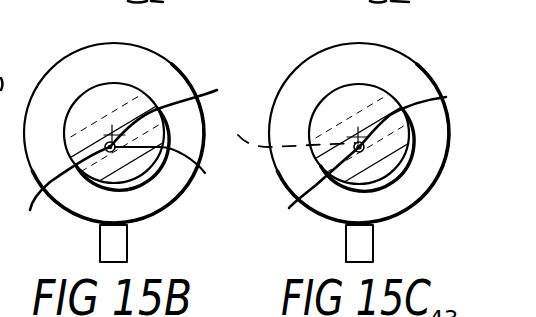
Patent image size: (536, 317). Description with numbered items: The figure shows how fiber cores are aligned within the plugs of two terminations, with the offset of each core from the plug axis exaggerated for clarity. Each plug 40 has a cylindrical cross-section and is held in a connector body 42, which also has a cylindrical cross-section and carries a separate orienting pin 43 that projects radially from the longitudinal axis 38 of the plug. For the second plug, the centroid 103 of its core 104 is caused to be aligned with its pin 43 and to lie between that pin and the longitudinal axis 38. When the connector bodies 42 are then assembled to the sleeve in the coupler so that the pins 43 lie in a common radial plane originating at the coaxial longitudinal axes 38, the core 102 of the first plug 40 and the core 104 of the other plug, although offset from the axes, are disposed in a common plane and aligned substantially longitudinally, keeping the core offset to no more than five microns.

In FIG. 15B, the longitudinal axis 38 is at (217, 90).
In FIG. 15C, the longitudinal axis 38 is at (446, 97).
In FIG. 15B, the plug 40 is at (132, 85).
In FIG. 15C, the plug 40 is at (373, 83).
In FIG. 15B, the connector body 42 is at (177, 68).
In FIG. 15C, the connector body 42 is at (409, 60).
In FIG. 15B, the orienting pin 43 is at (118, 248).
In FIG. 15C, the orienting pin 43 is at (363, 248).
In FIG. 15C, the core 102 is at (285, 129).
In FIG. 15B, the centroid 103 is at (174, 180).
In FIG. 15B, the core 104 is at (61, 192).
In FIG. 15C, the core 104 is at (313, 195).